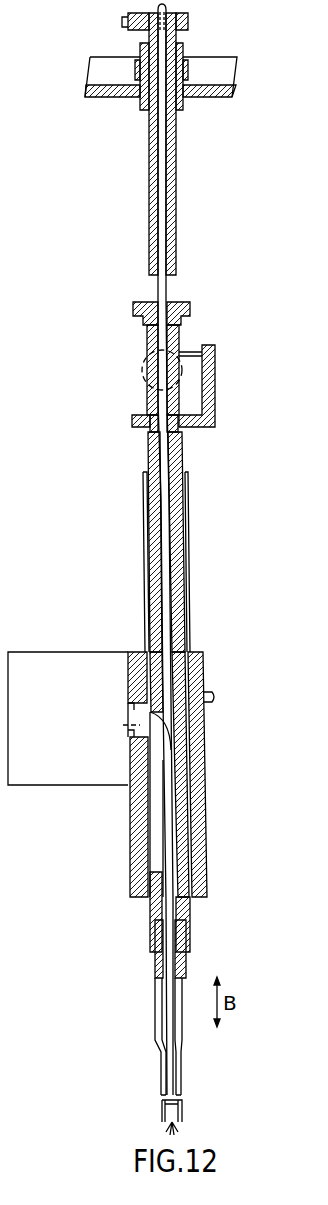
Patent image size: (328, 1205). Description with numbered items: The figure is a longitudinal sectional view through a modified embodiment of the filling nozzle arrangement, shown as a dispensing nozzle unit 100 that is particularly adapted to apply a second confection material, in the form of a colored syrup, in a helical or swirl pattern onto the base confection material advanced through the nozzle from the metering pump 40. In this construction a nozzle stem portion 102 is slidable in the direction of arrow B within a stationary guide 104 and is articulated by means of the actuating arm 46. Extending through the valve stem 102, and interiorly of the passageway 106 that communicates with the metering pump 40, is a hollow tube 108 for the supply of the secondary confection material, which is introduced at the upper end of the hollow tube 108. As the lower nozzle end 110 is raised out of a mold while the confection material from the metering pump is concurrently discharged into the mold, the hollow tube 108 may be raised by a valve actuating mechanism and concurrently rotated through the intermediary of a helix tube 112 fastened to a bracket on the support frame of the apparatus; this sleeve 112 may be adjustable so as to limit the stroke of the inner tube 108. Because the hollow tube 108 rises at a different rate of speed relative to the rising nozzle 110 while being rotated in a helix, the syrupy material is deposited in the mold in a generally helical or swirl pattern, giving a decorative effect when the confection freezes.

The metering pump 40 is at (23, 652).
The actuating arm 46 is at (215, 370).
The dispensing nozzle unit 100 is at (198, 549).
The nozzle stem portion 102 is at (182, 447).
The stationary guide 104 is at (188, 507).
The passageway 106 is at (152, 834).
The hollow tube 108 is at (172, 637).
The lower nozzle end 110 is at (178, 1058).
The helix tube 112 is at (183, 105).